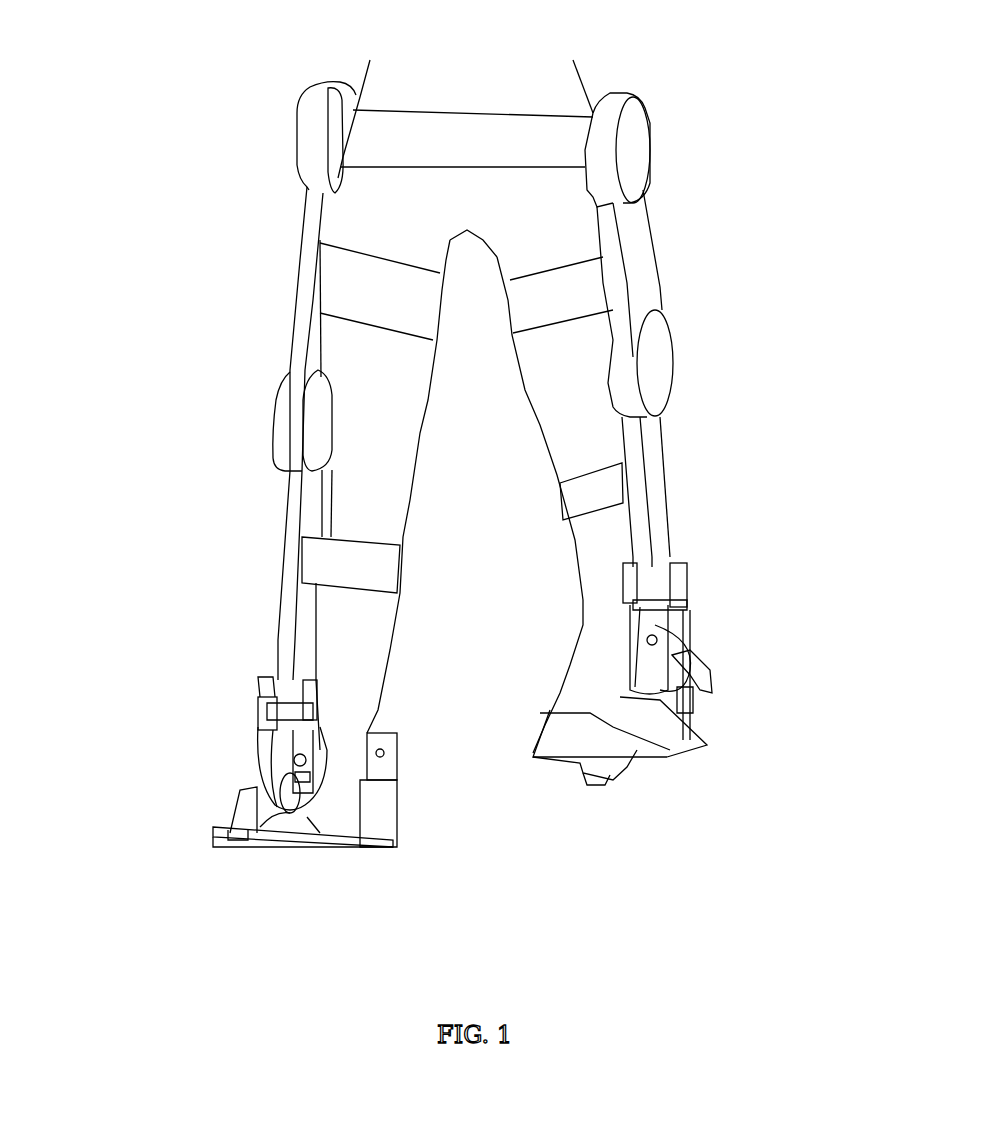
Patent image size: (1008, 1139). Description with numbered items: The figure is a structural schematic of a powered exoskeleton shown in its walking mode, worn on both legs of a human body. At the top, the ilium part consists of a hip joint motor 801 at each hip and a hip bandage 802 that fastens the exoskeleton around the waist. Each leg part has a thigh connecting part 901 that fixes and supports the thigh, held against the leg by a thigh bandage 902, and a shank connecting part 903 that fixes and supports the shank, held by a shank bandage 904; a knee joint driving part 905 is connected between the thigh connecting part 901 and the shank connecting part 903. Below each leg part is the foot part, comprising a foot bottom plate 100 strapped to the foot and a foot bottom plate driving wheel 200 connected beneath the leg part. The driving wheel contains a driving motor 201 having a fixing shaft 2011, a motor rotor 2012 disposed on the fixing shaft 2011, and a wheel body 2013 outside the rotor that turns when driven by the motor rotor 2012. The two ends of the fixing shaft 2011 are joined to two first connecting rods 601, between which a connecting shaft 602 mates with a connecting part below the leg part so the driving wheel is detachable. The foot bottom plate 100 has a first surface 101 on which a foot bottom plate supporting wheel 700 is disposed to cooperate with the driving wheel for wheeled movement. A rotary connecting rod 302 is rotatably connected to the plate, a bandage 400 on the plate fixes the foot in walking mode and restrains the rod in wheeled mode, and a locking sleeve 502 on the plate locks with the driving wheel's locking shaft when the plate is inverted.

The foot bottom plate 100 is at (340, 840).
The first surface 101 is at (583, 757).
The foot bottom plate driving wheel 200 is at (272, 803).
The driving motor 201 is at (98, 718).
The fixing shaft 2011 is at (300, 775).
The motor rotor 2012 is at (290, 760).
The wheel body 2013 is at (275, 763).
The rotary connecting rod 302 is at (223, 810).
The bandage 400 is at (327, 820).
The locking sleeve 502 is at (237, 830).
The first connecting rod 601 is at (263, 700).
The connecting shaft 602 is at (267, 677).
The foot bottom plate supporting wheel 700 is at (380, 745).
The hip joint motor 801 is at (313, 140).
The hip bandage 802 is at (474, 140).
The thigh connecting part 901 is at (300, 272).
The thigh bandage 902 is at (368, 302).
The shank connecting part 903 is at (285, 565).
The shank bandage 904 is at (350, 572).
The knee joint driving part 905 is at (287, 437).